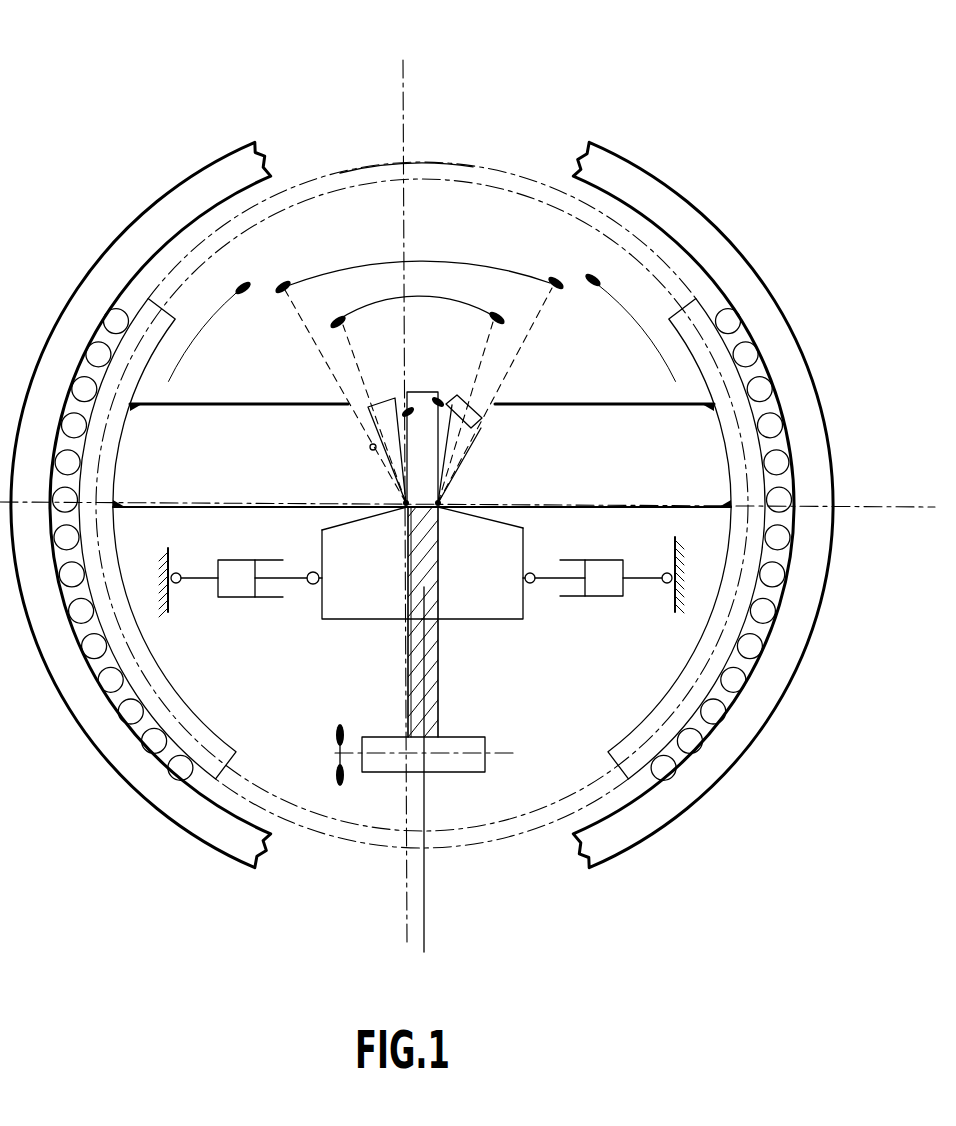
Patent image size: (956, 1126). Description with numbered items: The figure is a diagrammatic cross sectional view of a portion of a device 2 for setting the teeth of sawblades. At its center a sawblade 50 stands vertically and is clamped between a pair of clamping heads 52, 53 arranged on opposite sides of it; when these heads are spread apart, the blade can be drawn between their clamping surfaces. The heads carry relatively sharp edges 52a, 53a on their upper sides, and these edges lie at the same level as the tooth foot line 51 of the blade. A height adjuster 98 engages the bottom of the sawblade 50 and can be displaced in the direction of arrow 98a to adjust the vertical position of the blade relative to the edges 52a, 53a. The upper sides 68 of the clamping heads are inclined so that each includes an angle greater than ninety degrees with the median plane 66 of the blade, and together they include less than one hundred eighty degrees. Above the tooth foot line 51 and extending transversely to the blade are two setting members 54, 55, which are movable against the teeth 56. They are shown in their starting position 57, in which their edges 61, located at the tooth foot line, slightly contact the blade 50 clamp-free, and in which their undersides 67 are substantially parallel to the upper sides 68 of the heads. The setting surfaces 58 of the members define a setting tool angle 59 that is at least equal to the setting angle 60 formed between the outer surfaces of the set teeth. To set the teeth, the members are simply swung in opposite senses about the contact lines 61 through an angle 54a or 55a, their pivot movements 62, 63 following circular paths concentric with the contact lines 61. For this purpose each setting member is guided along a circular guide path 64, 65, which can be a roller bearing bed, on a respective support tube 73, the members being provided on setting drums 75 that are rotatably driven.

The device for setting sawblades 2 is at (503, 100).
The sawblade 50 is at (438, 710).
The tooth foot line 51 is at (397, 533).
The clamping head 52 is at (510, 597).
The sharp edge 52a is at (447, 510).
The clamping head 53 is at (322, 545).
The sharp edge 53a is at (403, 510).
The setting member 54 is at (672, 452).
The swing angle 54a is at (448, 410).
The setting member 55 is at (243, 476).
The swing angle 55a is at (360, 400).
The teeth 56 is at (455, 432).
The starting position 57 is at (830, 497).
The setting surface 58 is at (370, 448).
The setting tool angle 59 is at (333, 268).
The setting angle 60 is at (455, 304).
The edge / contact line 61 is at (440, 503).
The pivot movement 62 is at (638, 313).
The pivot movement 63 is at (203, 317).
The circular guide path 64 is at (693, 273).
The circular guide path 65 is at (147, 280).
The median plane 66 is at (425, 932).
The underside 67 is at (740, 672).
The upper side 68 is at (500, 518).
The support tube 73 is at (120, 745).
The setting drum 75 is at (215, 790).
The height adjuster 98 is at (457, 762).
The arrow 98a is at (333, 757).